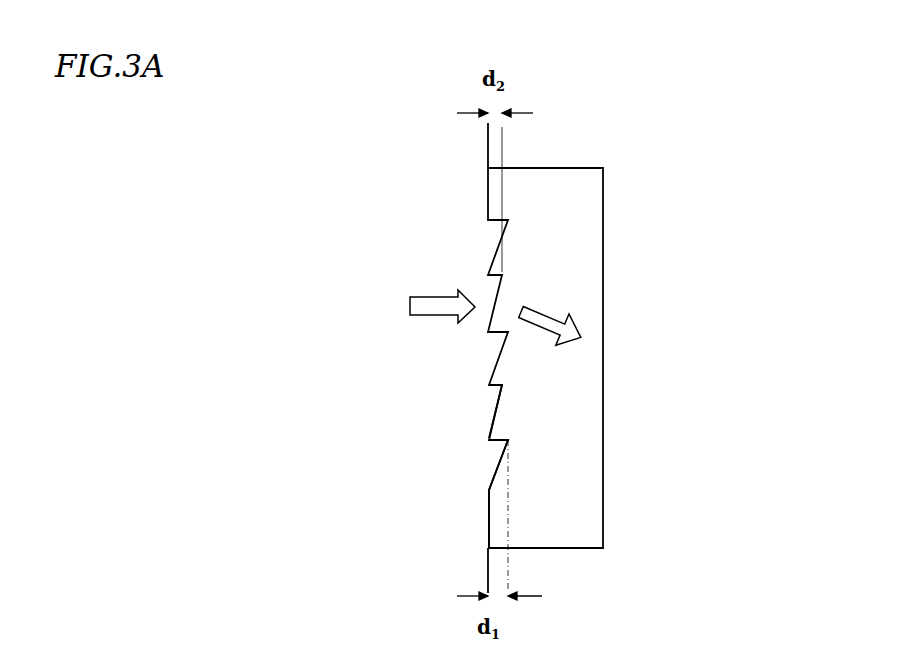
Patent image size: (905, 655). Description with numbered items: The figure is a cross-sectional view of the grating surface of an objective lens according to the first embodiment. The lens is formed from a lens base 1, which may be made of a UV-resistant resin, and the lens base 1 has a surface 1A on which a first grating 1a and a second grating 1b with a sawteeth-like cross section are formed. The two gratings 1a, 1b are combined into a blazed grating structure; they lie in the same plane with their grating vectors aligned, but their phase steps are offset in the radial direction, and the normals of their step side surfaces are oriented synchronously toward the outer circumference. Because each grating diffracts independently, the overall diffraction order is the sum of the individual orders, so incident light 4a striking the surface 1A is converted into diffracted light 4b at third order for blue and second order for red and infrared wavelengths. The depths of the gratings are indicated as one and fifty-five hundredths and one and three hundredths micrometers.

The lens base 1 is at (577, 480).
The surface 1A is at (490, 502).
The first grating 1a is at (502, 447).
The second grating 1b is at (493, 392).
The incident light 4a is at (442, 291).
The diffracted light 4b is at (550, 312).